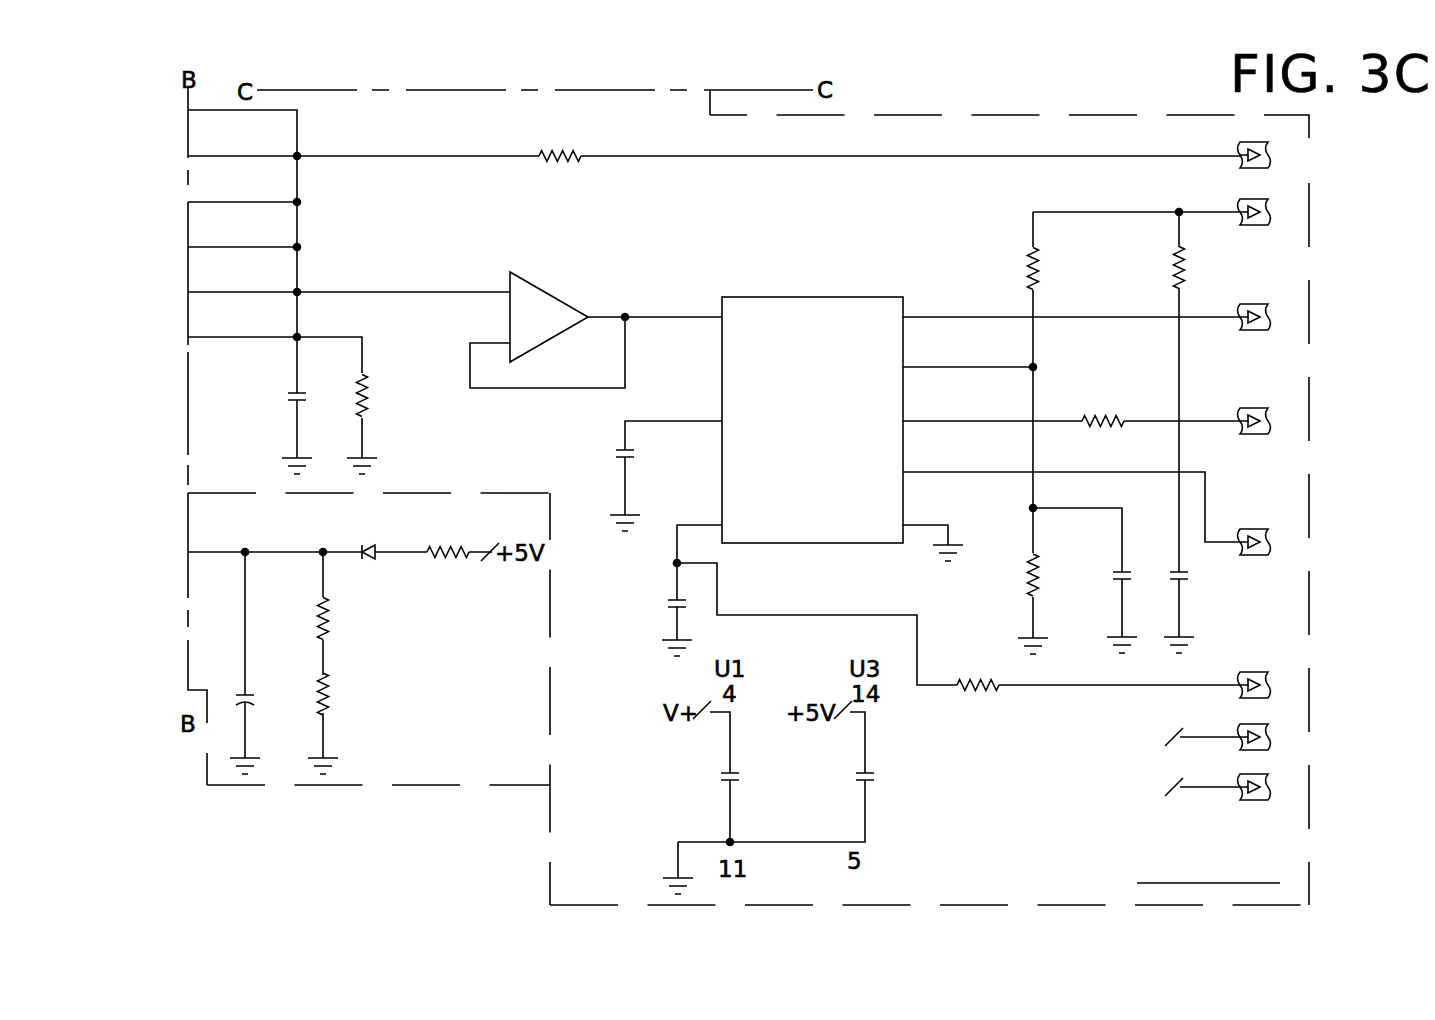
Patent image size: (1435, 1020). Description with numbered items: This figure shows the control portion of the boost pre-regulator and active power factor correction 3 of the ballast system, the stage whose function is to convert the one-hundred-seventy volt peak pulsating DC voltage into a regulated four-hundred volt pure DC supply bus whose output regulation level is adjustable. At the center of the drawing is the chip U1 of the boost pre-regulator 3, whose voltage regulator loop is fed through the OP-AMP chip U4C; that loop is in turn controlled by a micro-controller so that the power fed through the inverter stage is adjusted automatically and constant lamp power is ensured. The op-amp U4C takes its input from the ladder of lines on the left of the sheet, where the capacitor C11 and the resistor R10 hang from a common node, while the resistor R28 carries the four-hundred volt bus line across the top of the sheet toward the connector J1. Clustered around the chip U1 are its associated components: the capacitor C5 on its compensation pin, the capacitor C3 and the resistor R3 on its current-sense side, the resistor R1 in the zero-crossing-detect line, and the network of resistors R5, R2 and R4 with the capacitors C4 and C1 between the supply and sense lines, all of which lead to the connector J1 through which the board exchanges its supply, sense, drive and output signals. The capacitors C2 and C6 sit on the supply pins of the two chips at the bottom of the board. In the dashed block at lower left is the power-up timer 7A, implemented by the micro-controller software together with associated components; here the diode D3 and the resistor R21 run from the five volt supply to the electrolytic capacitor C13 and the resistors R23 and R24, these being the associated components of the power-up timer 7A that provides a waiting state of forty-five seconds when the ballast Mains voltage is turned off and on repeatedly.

The power-up timer 7A is at (323, 790).
The boost pre-regulator and active power factor correction 3 is at (549, 877).
The resistor R28 is at (562, 155).
The capacitor C11 is at (272, 414).
The resistor R10 is at (396, 421).
The OP-AMP chip U4C is at (550, 303).
The capacitor C5 is at (605, 476).
The chip U1 is at (813, 423).
The resistor R1 is at (1103, 422).
The capacitor C3 is at (661, 613).
The resistor R3 is at (976, 687).
The resistor R5 is at (993, 263).
The resistor R4 is at (1000, 602).
The capacitor C4 is at (1094, 602).
The resistor R2 is at (1139, 262).
The capacitor C1 is at (1202, 602).
The connector J1 is at (1260, 464).
The capacitor C2 is at (753, 793).
The capacitor C6 is at (888, 793).
The diode D3 is at (368, 553).
The resistor R21 is at (447, 553).
The capacitor C13 is at (263, 721).
The resistor R23 is at (365, 619).
The resistor R24 is at (359, 722).